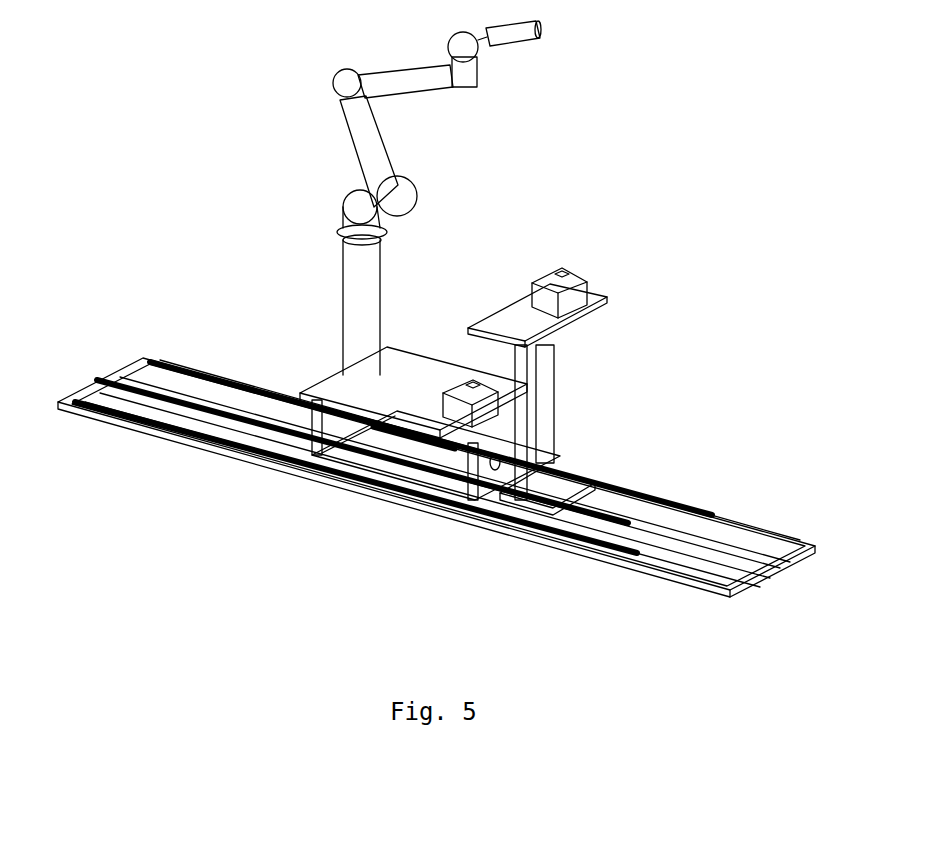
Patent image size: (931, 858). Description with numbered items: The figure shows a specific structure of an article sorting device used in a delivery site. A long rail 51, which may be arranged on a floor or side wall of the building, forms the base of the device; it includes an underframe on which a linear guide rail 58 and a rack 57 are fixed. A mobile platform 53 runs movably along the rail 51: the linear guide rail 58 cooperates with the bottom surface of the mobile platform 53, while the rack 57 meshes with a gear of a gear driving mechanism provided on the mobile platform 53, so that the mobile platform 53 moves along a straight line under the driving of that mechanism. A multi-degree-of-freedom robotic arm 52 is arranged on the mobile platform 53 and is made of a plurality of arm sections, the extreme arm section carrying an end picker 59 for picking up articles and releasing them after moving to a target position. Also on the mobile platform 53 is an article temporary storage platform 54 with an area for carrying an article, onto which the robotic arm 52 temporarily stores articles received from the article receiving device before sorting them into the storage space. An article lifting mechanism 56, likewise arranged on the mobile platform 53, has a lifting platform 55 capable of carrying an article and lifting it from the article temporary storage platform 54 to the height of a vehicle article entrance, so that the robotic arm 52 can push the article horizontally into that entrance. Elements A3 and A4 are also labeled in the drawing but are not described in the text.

The rail 51 is at (233, 460).
The multi-degree-of-freedom robotic arm 52 is at (365, 117).
The mobile platform 53 is at (388, 470).
The article temporary storage platform 54 is at (413, 400).
The lifting platform 55 is at (507, 312).
The article lifting mechanism 56 is at (537, 353).
The rack 57 is at (595, 507).
The linear guide rail 58 is at (683, 500).
The end picker 59 is at (541, 30).
The fixing element A3 is at (578, 283).
The fixing element A4 is at (457, 407).